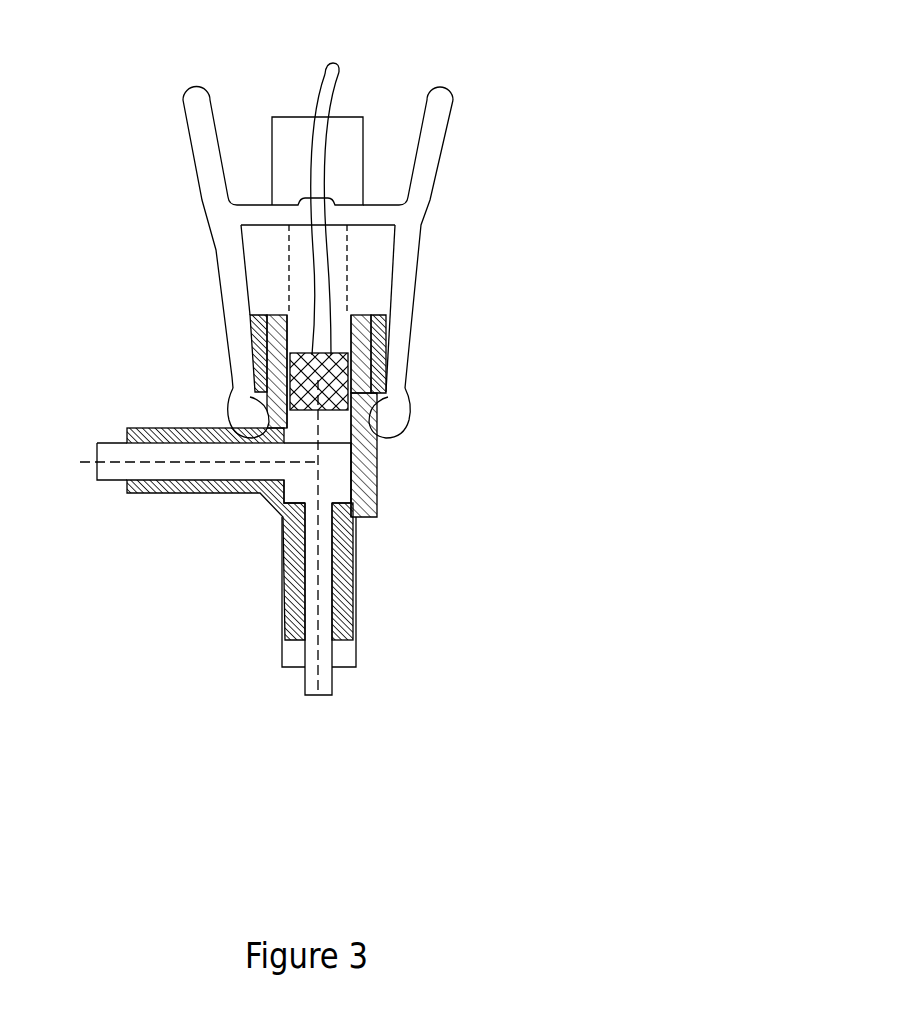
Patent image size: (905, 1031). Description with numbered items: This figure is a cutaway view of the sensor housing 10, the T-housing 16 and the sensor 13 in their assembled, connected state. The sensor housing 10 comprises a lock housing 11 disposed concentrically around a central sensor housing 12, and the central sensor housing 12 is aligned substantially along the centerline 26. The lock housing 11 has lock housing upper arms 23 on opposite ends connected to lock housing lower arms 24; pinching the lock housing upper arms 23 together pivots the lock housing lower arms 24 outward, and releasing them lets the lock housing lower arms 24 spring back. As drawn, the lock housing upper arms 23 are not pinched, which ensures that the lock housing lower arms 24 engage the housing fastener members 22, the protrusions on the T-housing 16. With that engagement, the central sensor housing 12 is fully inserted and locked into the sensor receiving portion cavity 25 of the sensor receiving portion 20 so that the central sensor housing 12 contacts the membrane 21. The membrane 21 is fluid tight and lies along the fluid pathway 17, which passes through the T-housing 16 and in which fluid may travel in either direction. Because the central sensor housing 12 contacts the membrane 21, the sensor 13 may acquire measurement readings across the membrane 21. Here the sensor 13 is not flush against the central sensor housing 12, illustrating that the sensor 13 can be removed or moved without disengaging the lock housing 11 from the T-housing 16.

The sensor housing 10 is at (136, 144).
The lock housing 11 is at (445, 174).
The central sensor housing 12 is at (360, 238).
The sensor 13 is at (322, 391).
The T-housing 16 is at (229, 597).
The fluid pathway 17 is at (329, 505).
The sensor receiving portion 20 is at (388, 322).
The membrane 21 is at (313, 446).
The housing fastener members 22 is at (258, 392).
The lock housing upper arms 23 is at (186, 82).
The lock housing lower arms 24 is at (238, 410).
The sensor receiving portion cavity 25 is at (326, 421).
The centerline 26 is at (322, 649).